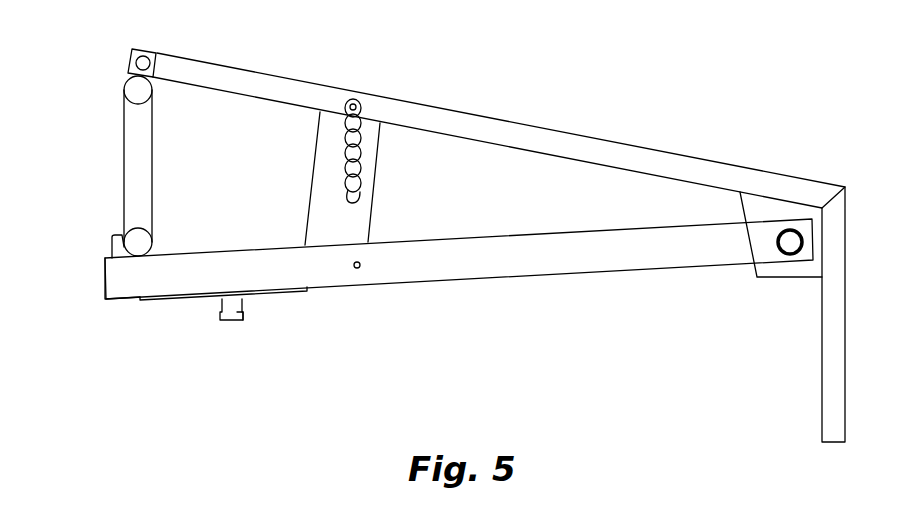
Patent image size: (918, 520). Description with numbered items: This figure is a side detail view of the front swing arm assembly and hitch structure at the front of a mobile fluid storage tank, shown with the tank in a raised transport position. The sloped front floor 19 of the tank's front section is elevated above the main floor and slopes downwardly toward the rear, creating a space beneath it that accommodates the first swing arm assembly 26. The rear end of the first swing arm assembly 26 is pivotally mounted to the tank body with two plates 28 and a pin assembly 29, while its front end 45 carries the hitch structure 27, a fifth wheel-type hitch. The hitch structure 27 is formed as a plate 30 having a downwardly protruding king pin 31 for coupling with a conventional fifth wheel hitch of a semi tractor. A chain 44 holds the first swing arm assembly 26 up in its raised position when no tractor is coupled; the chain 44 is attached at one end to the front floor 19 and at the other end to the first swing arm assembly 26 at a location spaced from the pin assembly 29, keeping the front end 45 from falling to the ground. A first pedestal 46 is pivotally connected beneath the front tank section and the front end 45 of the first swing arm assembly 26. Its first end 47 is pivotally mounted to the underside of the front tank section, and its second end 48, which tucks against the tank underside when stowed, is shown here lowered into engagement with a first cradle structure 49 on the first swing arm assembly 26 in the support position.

The front floor 19 is at (557, 140).
The first swing arm assembly 26 is at (438, 270).
The hitch structure 27 is at (222, 320).
The plates 28 is at (762, 275).
The pin assembly 29 is at (797, 252).
The plate 30 is at (287, 293).
The king pin 31 is at (242, 312).
The chain 44 is at (355, 160).
The front end 45 is at (108, 273).
The first pedestal 46 is at (132, 162).
The first end 47 is at (135, 90).
The second end 48 is at (143, 242).
The first cradle structure 49 is at (112, 245).